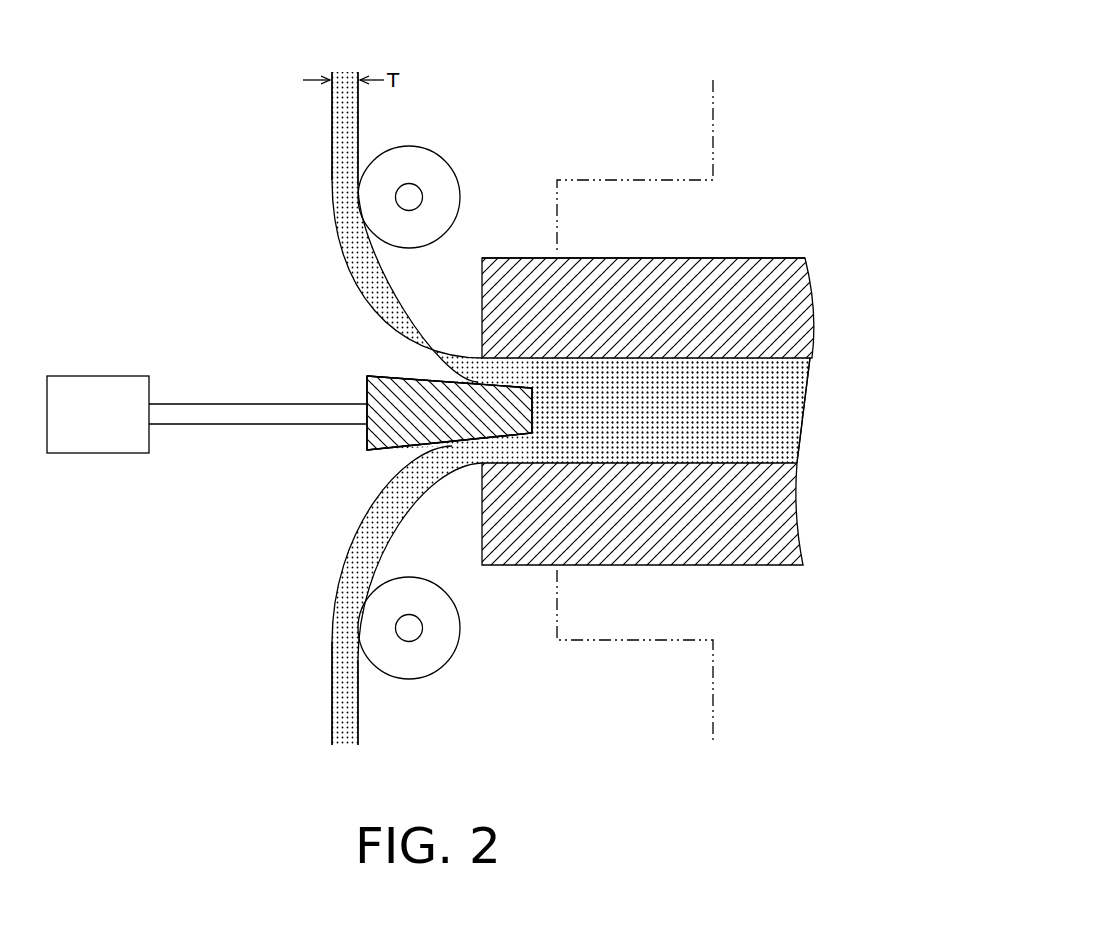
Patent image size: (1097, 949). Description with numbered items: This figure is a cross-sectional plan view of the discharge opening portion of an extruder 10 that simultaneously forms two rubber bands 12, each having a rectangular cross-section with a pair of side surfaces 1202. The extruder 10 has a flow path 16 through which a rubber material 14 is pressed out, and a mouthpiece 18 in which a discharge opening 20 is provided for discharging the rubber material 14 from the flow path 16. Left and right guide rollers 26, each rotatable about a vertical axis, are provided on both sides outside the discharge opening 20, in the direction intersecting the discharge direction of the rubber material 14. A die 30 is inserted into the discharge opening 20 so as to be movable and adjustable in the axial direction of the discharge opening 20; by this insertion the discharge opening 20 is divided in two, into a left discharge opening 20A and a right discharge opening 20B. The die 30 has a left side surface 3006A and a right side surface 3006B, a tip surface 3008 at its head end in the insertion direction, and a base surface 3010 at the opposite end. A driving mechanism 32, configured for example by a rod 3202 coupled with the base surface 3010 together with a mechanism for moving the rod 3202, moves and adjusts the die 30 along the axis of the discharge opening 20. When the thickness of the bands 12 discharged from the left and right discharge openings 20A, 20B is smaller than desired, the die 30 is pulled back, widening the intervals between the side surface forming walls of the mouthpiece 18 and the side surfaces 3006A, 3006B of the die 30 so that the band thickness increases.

The extruder 10 is at (709, 129).
The band 12 is at (332, 142).
The side surface 1202 is at (332, 150).
The rubber material 14 is at (752, 376).
The flow path 16 is at (743, 462).
The mouthpiece 18 is at (548, 257).
The discharge opening 20 is at (506, 413).
The left discharge opening 20A is at (467, 352).
The right discharge opening 20B is at (470, 480).
The guide roller 26 is at (448, 165).
The die 30 is at (367, 375).
The left side surface 3006A is at (400, 370).
The right side surface 3006B is at (403, 450).
The tip surface 3008 is at (533, 412).
The base surface 3010 is at (368, 426).
The driving mechanism 32 is at (100, 376).
The rod 3202 is at (205, 404).